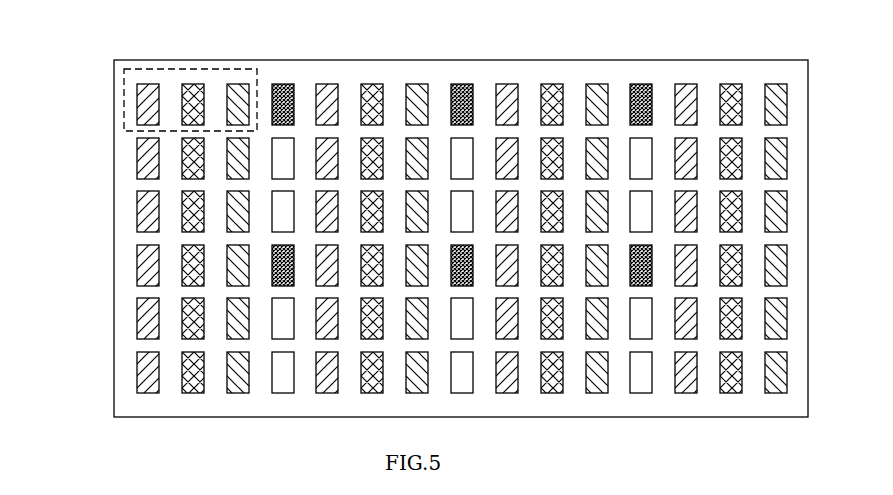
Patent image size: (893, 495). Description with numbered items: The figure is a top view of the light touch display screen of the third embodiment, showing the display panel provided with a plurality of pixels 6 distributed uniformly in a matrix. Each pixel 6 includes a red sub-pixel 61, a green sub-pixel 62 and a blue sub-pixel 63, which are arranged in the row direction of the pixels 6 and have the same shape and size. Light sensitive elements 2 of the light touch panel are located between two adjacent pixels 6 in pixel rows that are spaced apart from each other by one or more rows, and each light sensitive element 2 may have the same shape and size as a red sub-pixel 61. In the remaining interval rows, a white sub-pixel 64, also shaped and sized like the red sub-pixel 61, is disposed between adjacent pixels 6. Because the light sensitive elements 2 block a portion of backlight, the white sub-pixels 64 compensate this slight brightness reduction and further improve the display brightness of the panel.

The pixel 6 is at (213, 69).
The red sub-pixel 61 is at (143, 100).
The green sub-pixel 62 is at (185, 100).
The blue sub-pixel 63 is at (243, 97).
The white sub-pixel 64 is at (640, 160).
The light sensitive element 2 is at (469, 92).